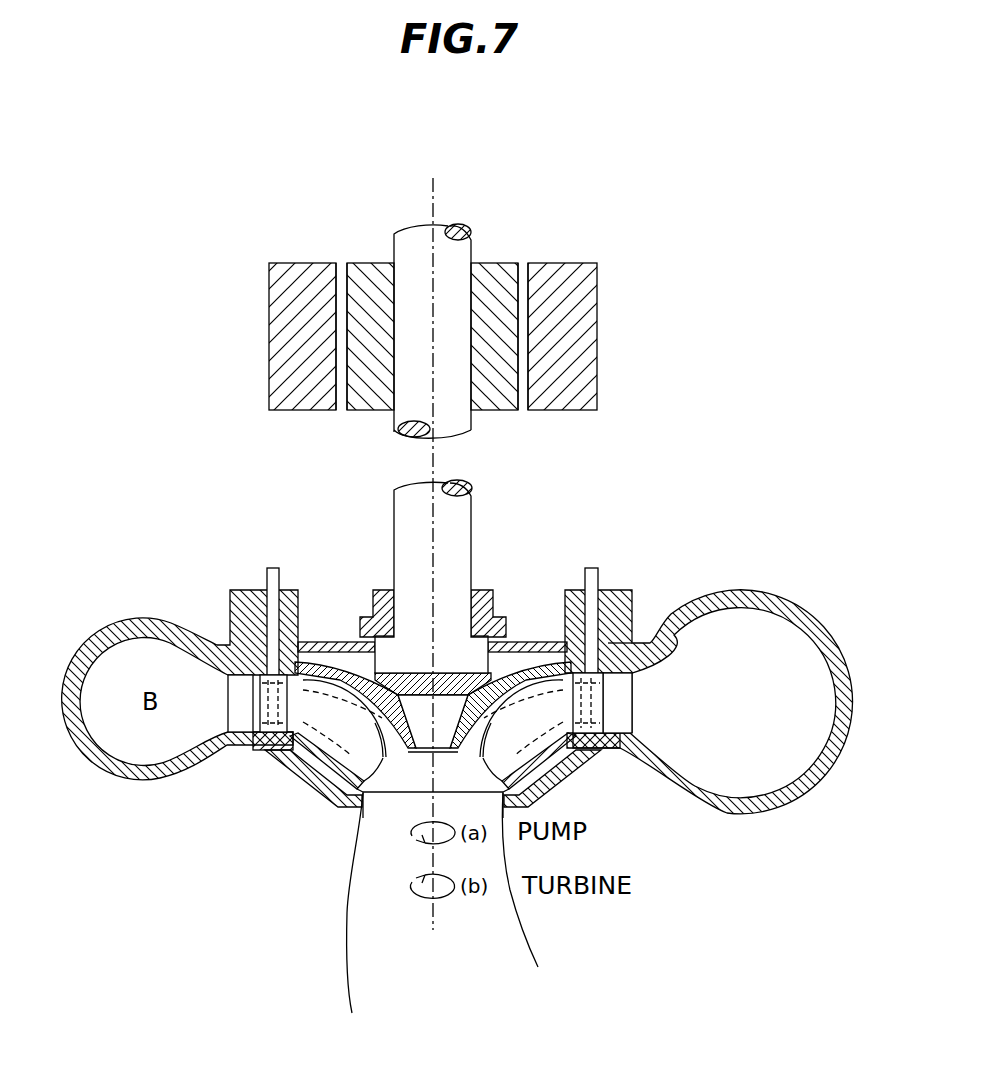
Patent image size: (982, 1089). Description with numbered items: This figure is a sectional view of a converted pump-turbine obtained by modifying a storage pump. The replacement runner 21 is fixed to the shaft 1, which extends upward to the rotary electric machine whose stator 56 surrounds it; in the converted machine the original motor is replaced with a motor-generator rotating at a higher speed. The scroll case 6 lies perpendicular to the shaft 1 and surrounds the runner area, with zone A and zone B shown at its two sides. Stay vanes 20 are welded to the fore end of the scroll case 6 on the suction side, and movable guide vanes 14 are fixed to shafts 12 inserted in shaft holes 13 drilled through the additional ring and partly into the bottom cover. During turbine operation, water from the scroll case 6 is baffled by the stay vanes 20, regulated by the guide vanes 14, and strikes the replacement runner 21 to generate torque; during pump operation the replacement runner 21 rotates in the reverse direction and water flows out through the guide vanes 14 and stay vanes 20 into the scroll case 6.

The stator 56 is at (588, 299).
The shaft 1 is at (460, 532).
The scroll case 6 is at (747, 593).
The shaft 12 is at (592, 573).
The replacement runner 21 is at (540, 653).
The guide vane 14 is at (605, 690).
The stay vane 20 is at (627, 710).
The shaft hole 13 is at (262, 742).